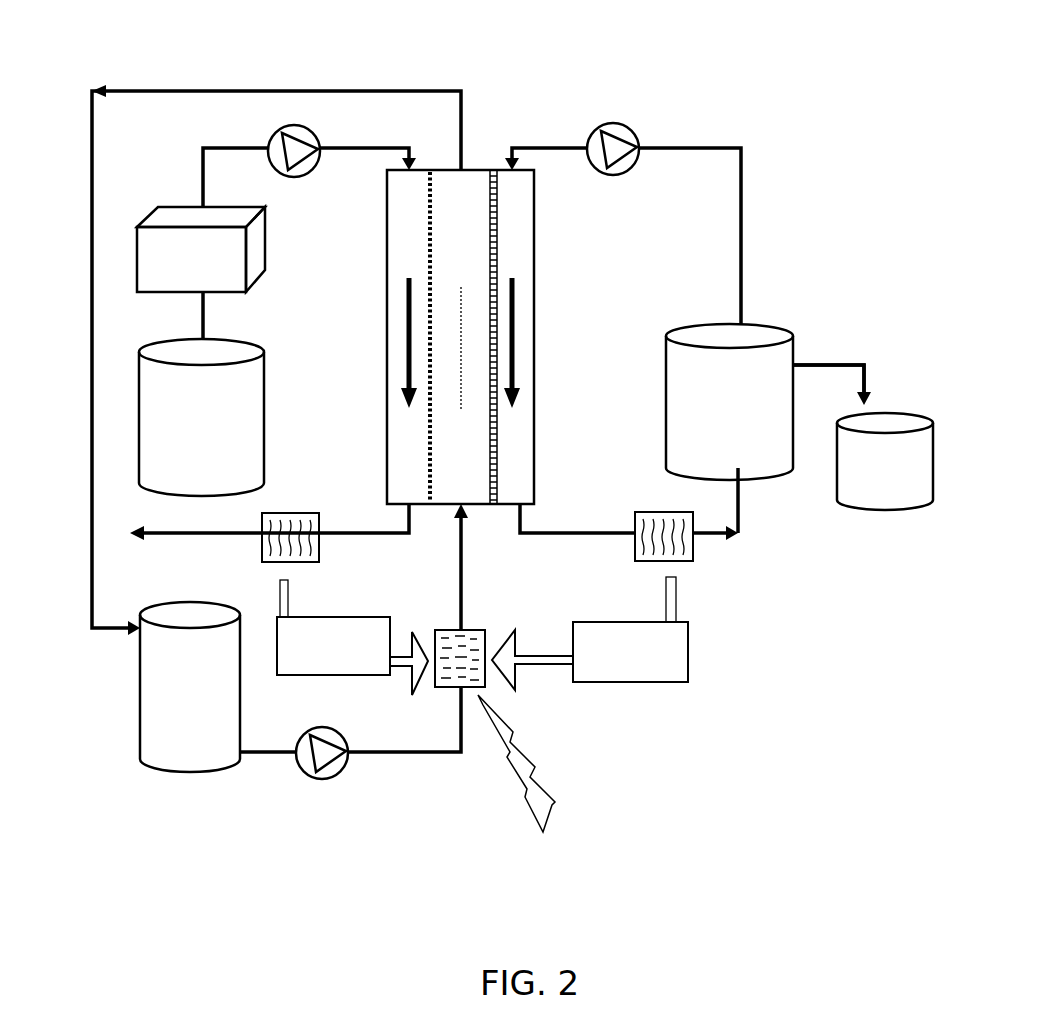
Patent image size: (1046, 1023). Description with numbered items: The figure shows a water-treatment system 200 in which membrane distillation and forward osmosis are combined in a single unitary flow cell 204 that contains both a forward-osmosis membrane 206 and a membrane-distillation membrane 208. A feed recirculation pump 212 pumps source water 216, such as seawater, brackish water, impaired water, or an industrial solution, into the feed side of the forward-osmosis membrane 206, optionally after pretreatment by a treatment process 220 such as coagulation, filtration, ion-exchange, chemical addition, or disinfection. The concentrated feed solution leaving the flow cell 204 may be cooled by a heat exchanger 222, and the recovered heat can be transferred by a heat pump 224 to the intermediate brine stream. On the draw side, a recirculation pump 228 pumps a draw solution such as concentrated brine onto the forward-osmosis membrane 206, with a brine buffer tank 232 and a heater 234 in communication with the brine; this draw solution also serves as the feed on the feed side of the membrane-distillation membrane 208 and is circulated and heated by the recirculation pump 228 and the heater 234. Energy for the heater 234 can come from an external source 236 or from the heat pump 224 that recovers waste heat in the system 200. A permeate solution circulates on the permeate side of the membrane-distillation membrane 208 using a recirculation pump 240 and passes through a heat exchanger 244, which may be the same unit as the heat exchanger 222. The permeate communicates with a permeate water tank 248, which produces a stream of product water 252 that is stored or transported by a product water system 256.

The system 200 is at (523, 80).
The flow cell 204 is at (534, 273).
The forward-osmosis membrane 206 is at (425, 462).
The membrane-distillation membrane 208 is at (497, 225).
The feed recirculation pump 212 is at (302, 126).
The source water 216 is at (264, 398).
The treatment process 220 is at (267, 247).
The heat exchanger 222 is at (320, 548).
The heat pump 224 is at (377, 678).
The recirculation pump 228 is at (350, 767).
The brine buffer tank 232 is at (130, 718).
The heater 234 is at (470, 625).
The external source 236 is at (535, 778).
The recirculation pump 240 is at (620, 125).
The heat exchanger 244 is at (628, 508).
The permeate water tank 248 is at (770, 320).
The product water 252 is at (820, 360).
The product water system 256 is at (832, 482).